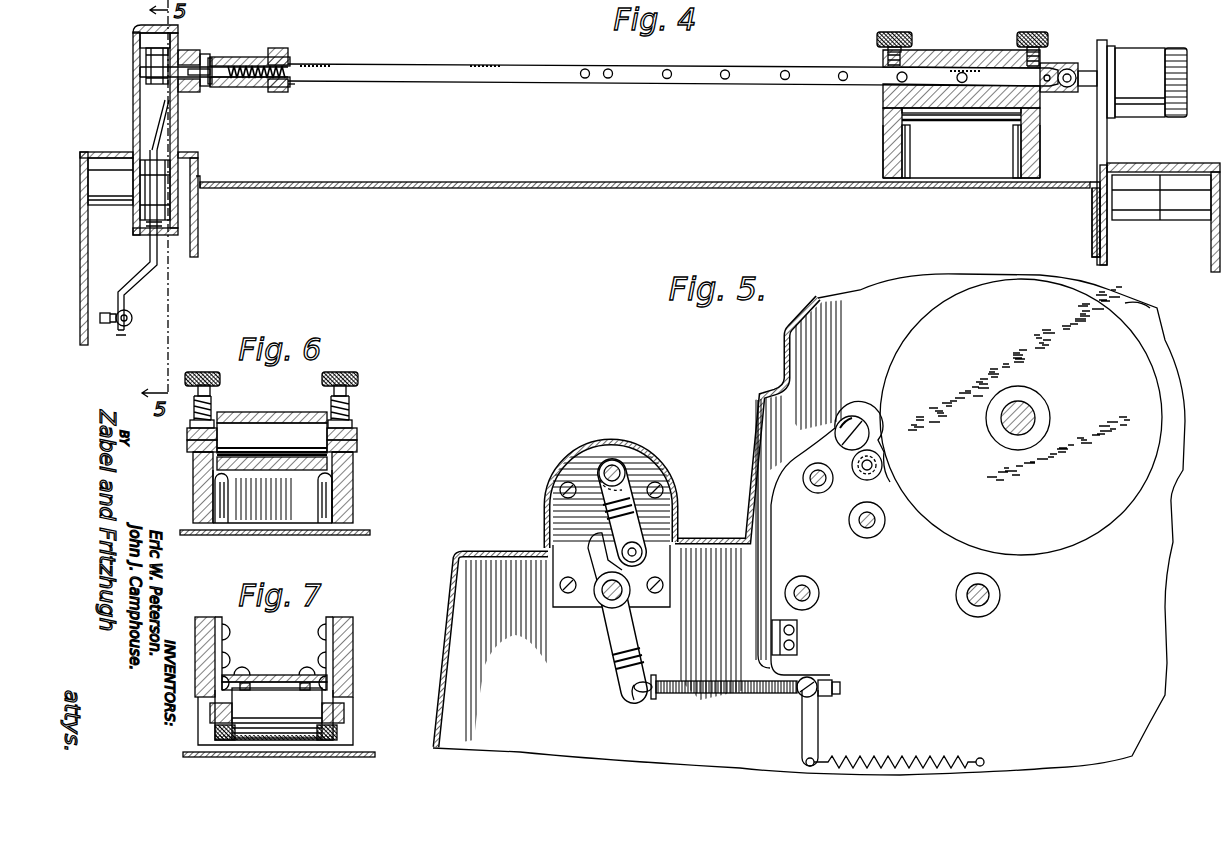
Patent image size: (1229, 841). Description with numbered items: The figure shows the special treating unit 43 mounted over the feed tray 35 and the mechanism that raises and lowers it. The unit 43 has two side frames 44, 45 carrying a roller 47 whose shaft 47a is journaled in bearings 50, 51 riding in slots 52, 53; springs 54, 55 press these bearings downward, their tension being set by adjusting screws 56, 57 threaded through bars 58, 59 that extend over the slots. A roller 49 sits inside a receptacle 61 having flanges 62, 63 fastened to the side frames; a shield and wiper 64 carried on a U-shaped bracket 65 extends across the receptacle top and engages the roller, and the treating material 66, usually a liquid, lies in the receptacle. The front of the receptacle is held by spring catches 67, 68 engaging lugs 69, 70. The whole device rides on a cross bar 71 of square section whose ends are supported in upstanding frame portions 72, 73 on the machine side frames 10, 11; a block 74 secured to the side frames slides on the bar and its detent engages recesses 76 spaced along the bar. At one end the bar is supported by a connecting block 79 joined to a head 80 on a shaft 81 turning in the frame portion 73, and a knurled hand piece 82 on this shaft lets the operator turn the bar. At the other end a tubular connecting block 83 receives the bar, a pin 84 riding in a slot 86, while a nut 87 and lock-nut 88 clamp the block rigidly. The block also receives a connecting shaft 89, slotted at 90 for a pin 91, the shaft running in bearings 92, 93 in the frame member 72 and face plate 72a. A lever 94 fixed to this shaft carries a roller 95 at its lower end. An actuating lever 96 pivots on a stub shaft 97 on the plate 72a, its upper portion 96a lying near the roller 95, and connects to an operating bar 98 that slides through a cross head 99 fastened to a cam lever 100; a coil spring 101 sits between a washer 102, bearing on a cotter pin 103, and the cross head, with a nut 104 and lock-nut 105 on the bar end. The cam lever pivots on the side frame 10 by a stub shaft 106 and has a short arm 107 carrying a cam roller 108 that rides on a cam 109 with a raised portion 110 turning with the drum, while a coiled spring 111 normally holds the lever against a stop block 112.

In FIG. 4, the side frame 10 is at (88, 258).
In FIG. 5, the side frame 10 is at (500, 554).
In FIG. 4, the side frame 11 is at (1205, 163).
In FIG. 4, the feed tray 35 is at (632, 188).
In FIG. 6, the feed tray 35 is at (344, 535).
In FIG. 7, the feed tray 35 is at (370, 757).
In FIG. 4, the special treating unit 43 is at (984, 40).
In FIG. 6, the special treating unit 43 is at (363, 491).
In FIG. 7, the special treating unit 43 is at (362, 689).
In FIG. 4, the side frame 44 is at (883, 104).
In FIG. 6, the side frame 44 is at (353, 504).
In FIG. 7, the side frame 44 is at (195, 642).
In FIG. 4, the side frame 45 is at (1040, 121).
In FIG. 6, the side frame 45 is at (193, 488).
In FIG. 7, the side frame 45 is at (353, 651).
In FIG. 6, the roller 47 is at (272, 412).
In FIG. 6, the shaft 47a is at (190, 447).
In FIG. 7, the roller 49 is at (285, 738).
In FIG. 6, the bearing 50 is at (190, 428).
In FIG. 6, the bearing 51 is at (352, 425).
In FIG. 6, the slot 52 is at (195, 458).
In FIG. 6, the slot 53 is at (353, 460).
In FIG. 6, the spring 54 is at (194, 414).
In FIG. 6, the spring 55 is at (349, 412).
In FIG. 4, the adjusting screw 56 is at (1042, 48).
In FIG. 6, the adjusting screw 56 is at (205, 372).
In FIG. 4, the adjusting screw 57 is at (888, 32).
In FIG. 6, the adjusting screw 57 is at (342, 372).
In FIG. 4, the bar 58 is at (1036, 32).
In FIG. 6, the bar 58 is at (210, 397).
In FIG. 4, the bar 59 is at (900, 44).
In FIG. 6, the bar 59 is at (346, 398).
In FIG. 4, the receptacle 61 is at (972, 178).
In FIG. 6, the receptacle 61 is at (277, 523).
In FIG. 7, the receptacle 61 is at (237, 745).
In FIG. 4, the flange 62 is at (910, 148).
In FIG. 4, the flange 63 is at (1013, 150).
In FIG. 4, the shield and wiper 64 is at (950, 113).
In FIG. 7, the shield and wiper 64 is at (270, 675).
In FIG. 4, the U-shaped bracket 65 is at (940, 120).
In FIG. 7, the U-shaped bracket 65 is at (228, 641).
In FIG. 7, the treating material 66 is at (328, 743).
In FIG. 6, the spring catch 67 is at (229, 488).
In FIG. 6, the spring catch 68 is at (318, 490).
In FIG. 6, the lug 69 is at (229, 505).
In FIG. 6, the lug 70 is at (318, 507).
In FIG. 4, the cross bar 71 is at (462, 82).
In FIG. 4, the frame portion 72 is at (133, 101).
In FIG. 5, the frame portion 72 is at (672, 518).
In FIG. 4, the face plate 72a is at (178, 130).
In FIG. 4, the frame portion 73 is at (1107, 137).
In FIG. 4, the block 74 is at (945, 50).
In FIG. 4, the recess 76 is at (728, 80).
In FIG. 4, the connecting block 79 is at (1056, 63).
In FIG. 4, the head 80 is at (1067, 88).
In FIG. 4, the shaft 81 is at (1087, 71).
In FIG. 4, the knurled hand piece 82 is at (1137, 55).
In FIG. 4, the connecting block 83 is at (248, 57).
In FIG. 4, the pin 84 is at (262, 87).
In FIG. 4, the slot 86 is at (278, 48).
In FIG. 4, the nut 87 is at (278, 92).
In FIG. 4, the lock-nut 88 is at (290, 86).
In FIG. 4, the connecting shaft 89 is at (192, 92).
In FIG. 5, the connecting shaft 89 is at (618, 466).
In FIG. 4, the slot 90 is at (212, 60).
In FIG. 4, the pin 91 is at (214, 80).
In FIG. 4, the bearing 92 is at (144, 58).
In FIG. 4, the bearing 93 is at (204, 54).
In FIG. 4, the lever 94 is at (158, 122).
In FIG. 5, the lever 94 is at (642, 552).
In FIG. 4, the roller 95 is at (140, 188).
In FIG. 5, the roller 95 is at (608, 532).
In FIG. 4, the actuating lever 96 is at (128, 284).
In FIG. 5, the actuating lever 96 is at (610, 632).
In FIG. 4, the lever arm 96a is at (150, 142).
In FIG. 5, the lever arm 96a is at (592, 560).
In FIG. 4, the stub shaft 97 is at (155, 232).
In FIG. 5, the stub shaft 97 is at (602, 602).
In FIG. 4, the operating bar 98 is at (133, 318).
In FIG. 5, the operating bar 98 is at (638, 700).
In FIG. 5, the cross head 99 is at (800, 698).
In FIG. 5, the cam lever 100 is at (785, 553).
In FIG. 5, the coil spring 101 is at (710, 693).
In FIG. 5, the washer 102 is at (656, 678).
In FIG. 5, the cotter pin 103 is at (645, 692).
In FIG. 5, the nut 104 is at (824, 696).
In FIG. 5, the lock-nut 105 is at (838, 694).
In FIG. 5, the stub shaft 106 is at (850, 416).
In FIG. 5, the short arm 107 is at (870, 445).
In FIG. 5, the cam roller 108 is at (882, 465).
In FIG. 5, the cam 109 is at (915, 335).
In FIG. 5, the raised portion 110 is at (1106, 310).
In FIG. 5, the coiled spring 111 is at (936, 756).
In FIG. 5, the stop block 112 is at (772, 637).